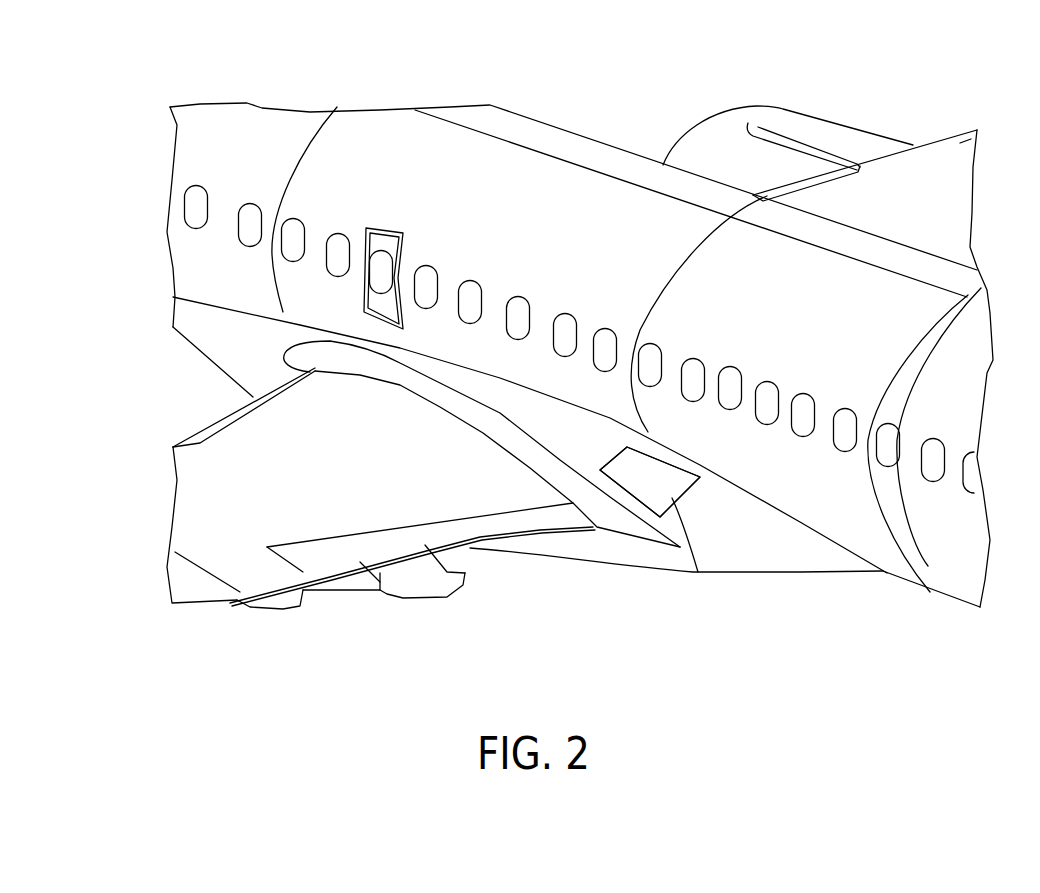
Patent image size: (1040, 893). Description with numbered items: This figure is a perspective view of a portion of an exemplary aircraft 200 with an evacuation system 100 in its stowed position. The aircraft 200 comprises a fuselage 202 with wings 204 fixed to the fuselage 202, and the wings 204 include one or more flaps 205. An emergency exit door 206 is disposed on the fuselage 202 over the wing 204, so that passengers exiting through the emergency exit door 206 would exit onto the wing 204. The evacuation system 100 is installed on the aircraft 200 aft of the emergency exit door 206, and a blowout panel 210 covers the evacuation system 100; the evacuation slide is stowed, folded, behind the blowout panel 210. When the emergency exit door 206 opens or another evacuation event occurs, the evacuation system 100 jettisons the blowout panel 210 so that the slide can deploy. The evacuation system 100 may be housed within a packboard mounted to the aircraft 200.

The evacuation system 100 is at (606, 442).
The aircraft 200 is at (128, 108).
The fuselage 202 is at (542, 230).
The wing 204 is at (287, 460).
The flap 205 is at (457, 520).
The emergency exit door 206 is at (375, 228).
The blowout panel 210 is at (665, 495).